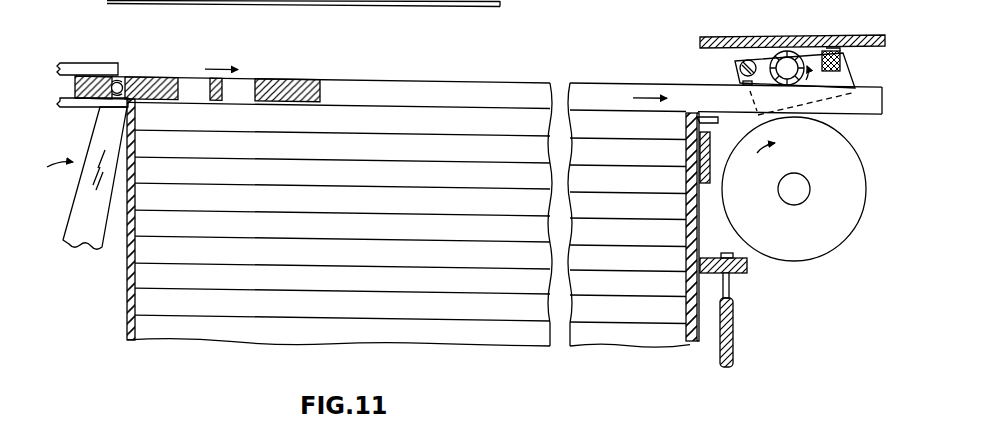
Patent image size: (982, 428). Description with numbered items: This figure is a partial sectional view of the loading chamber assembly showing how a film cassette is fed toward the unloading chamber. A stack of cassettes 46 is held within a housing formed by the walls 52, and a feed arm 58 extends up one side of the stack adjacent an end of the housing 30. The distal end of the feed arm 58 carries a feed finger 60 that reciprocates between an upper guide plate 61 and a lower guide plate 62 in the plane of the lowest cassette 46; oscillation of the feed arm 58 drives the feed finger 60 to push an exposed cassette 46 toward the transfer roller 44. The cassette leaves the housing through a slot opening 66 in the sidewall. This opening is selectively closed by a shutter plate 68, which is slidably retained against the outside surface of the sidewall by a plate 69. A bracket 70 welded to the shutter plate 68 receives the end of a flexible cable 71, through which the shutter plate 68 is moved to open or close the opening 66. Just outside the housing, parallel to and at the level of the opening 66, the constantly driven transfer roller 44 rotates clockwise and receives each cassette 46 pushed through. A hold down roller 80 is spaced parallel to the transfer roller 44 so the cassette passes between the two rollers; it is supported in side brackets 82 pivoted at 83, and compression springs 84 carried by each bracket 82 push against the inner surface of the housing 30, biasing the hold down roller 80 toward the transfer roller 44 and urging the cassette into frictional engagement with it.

The housing 30 is at (874, 37).
The transfer roller 44 is at (840, 236).
The cassettes 46 is at (462, 117).
The walls 52 is at (689, 218).
The feed arm 58 is at (75, 179).
The feed finger 60 is at (137, 80).
The upper guide plate 61 is at (105, 66).
The lower guide plate 62 is at (80, 107).
The slot opening 66 is at (690, 118).
The shutter plate 68 is at (697, 186).
The plate 69 is at (702, 162).
The bracket 70 is at (746, 266).
The flexible cable 71 is at (734, 343).
The hold down roller 80 is at (805, 50).
The side brackets 82 is at (762, 58).
The pivot 83 is at (745, 60).
The compression springs 84 is at (835, 48).